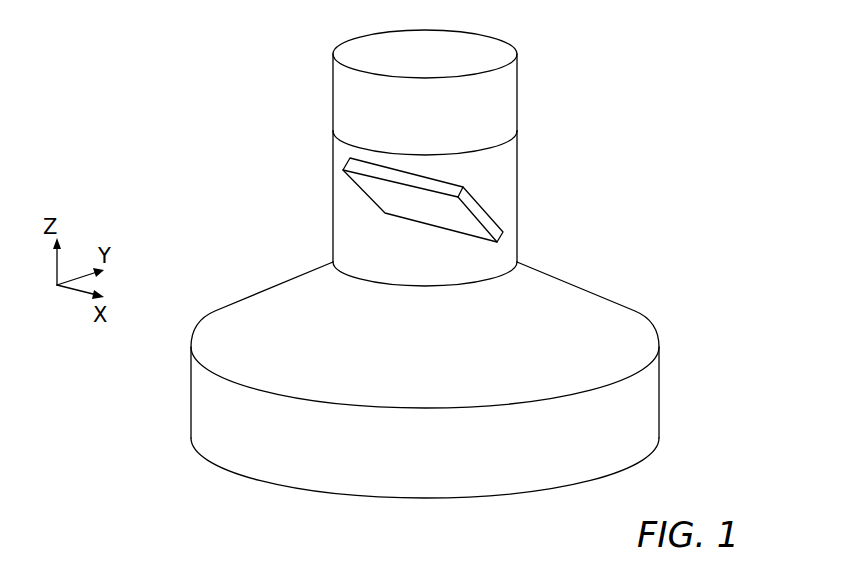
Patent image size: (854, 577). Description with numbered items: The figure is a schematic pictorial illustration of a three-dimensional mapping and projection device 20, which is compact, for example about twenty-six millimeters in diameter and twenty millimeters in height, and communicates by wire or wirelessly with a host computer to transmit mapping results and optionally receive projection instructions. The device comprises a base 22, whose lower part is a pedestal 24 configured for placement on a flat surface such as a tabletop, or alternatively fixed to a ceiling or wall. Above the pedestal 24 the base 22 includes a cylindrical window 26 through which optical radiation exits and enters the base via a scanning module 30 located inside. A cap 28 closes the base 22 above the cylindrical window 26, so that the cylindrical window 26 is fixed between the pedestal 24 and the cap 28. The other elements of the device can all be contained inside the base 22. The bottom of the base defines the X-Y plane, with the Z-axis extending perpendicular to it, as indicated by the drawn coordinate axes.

The 3D mapping and projection device 20 is at (245, 55).
The base 22 is at (680, 45).
The pedestal 24 is at (273, 487).
The cylindrical window 26 is at (517, 190).
The cap 28 is at (517, 97).
The scanning module 30 is at (362, 214).